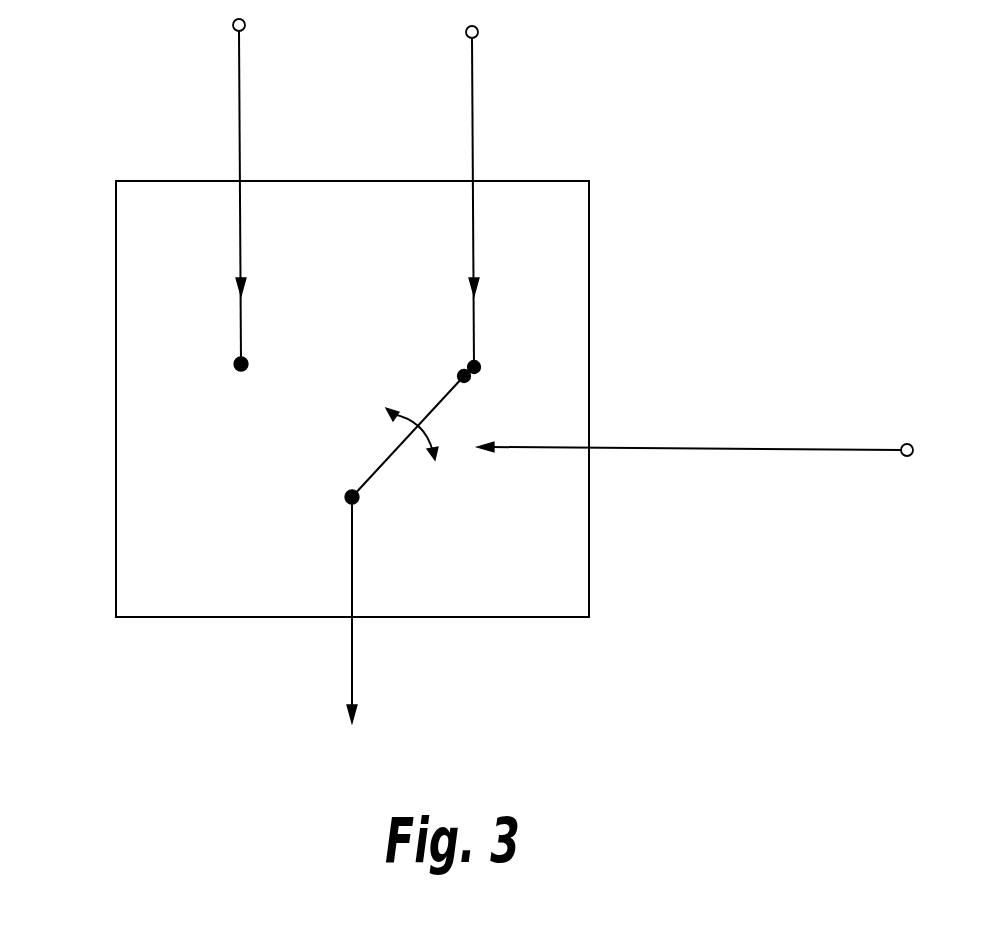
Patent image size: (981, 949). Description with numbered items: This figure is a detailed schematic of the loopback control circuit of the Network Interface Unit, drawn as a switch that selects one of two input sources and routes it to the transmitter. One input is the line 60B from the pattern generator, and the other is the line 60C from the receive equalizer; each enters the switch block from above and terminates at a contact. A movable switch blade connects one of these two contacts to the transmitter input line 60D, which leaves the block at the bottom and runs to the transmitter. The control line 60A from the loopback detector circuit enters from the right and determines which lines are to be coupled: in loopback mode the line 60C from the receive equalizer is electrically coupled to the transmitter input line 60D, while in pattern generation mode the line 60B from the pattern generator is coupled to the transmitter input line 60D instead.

The control line 60A is at (660, 447).
The line from the pattern generator 60B is at (240, 105).
The line from the receive equalizer 60C is at (471, 110).
The transmitter input line 60D is at (353, 652).